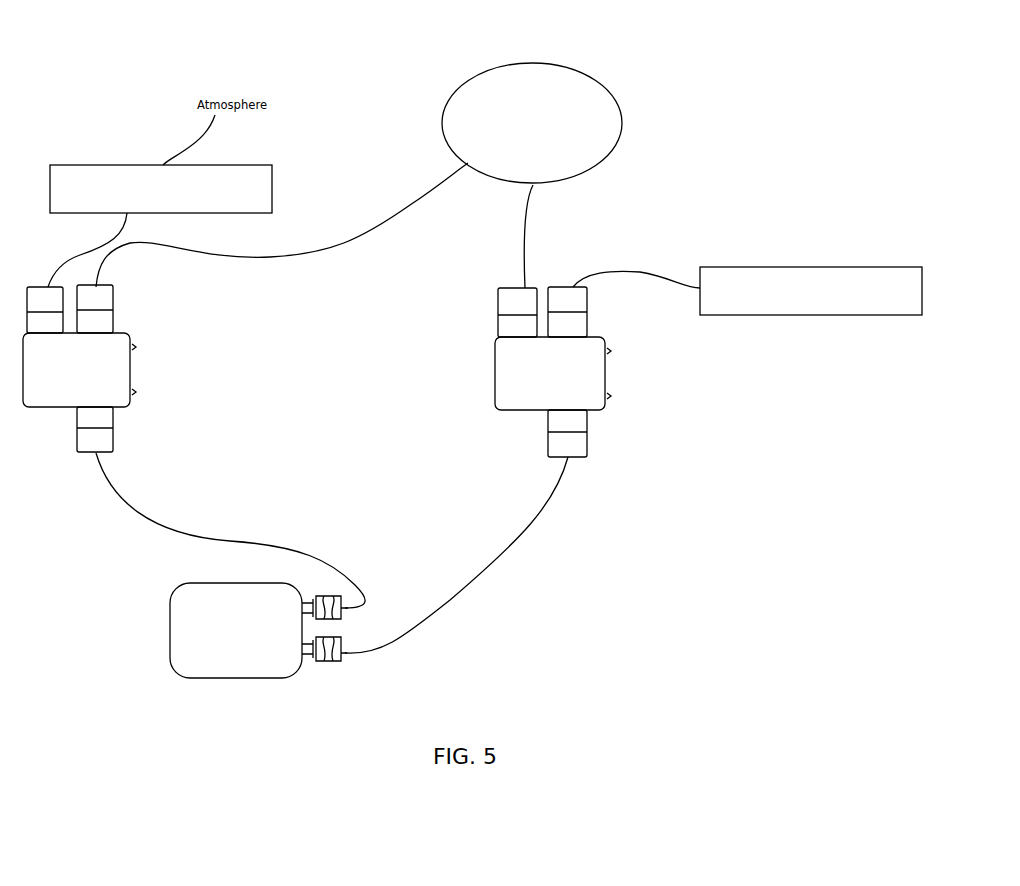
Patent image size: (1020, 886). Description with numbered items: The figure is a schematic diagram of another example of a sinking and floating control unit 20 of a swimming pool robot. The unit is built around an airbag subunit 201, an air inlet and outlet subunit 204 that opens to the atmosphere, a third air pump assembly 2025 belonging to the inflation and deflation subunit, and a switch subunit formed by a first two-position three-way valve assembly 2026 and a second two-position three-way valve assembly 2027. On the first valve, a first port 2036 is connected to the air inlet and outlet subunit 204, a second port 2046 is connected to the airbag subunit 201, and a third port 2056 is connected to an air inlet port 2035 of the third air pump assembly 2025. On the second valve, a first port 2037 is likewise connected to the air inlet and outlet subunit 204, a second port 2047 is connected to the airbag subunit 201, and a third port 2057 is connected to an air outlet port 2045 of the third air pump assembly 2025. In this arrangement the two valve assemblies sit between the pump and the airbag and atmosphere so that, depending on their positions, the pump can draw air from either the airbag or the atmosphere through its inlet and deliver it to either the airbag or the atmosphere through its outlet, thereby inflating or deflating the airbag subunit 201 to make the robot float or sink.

The sinking and floating control unit 20 is at (390, 32).
The airbag subunit 201 is at (532, 123).
The air inlet and outlet subunit 204 is at (486, 240).
The first two-position three-way valve assembly 2026 is at (79, 370).
The second two-position three-way valve assembly 2027 is at (553, 373).
The third air pump assembly 2025 is at (236, 630).
The first port 2036 is at (35, 300).
The second port 2046 is at (121, 300).
The third port 2056 is at (82, 448).
The first port 2037 is at (506, 304).
The second port 2047 is at (569, 299).
The third port 2057 is at (584, 448).
The air inlet port 2035 is at (354, 607).
The air outlet port 2045 is at (343, 649).